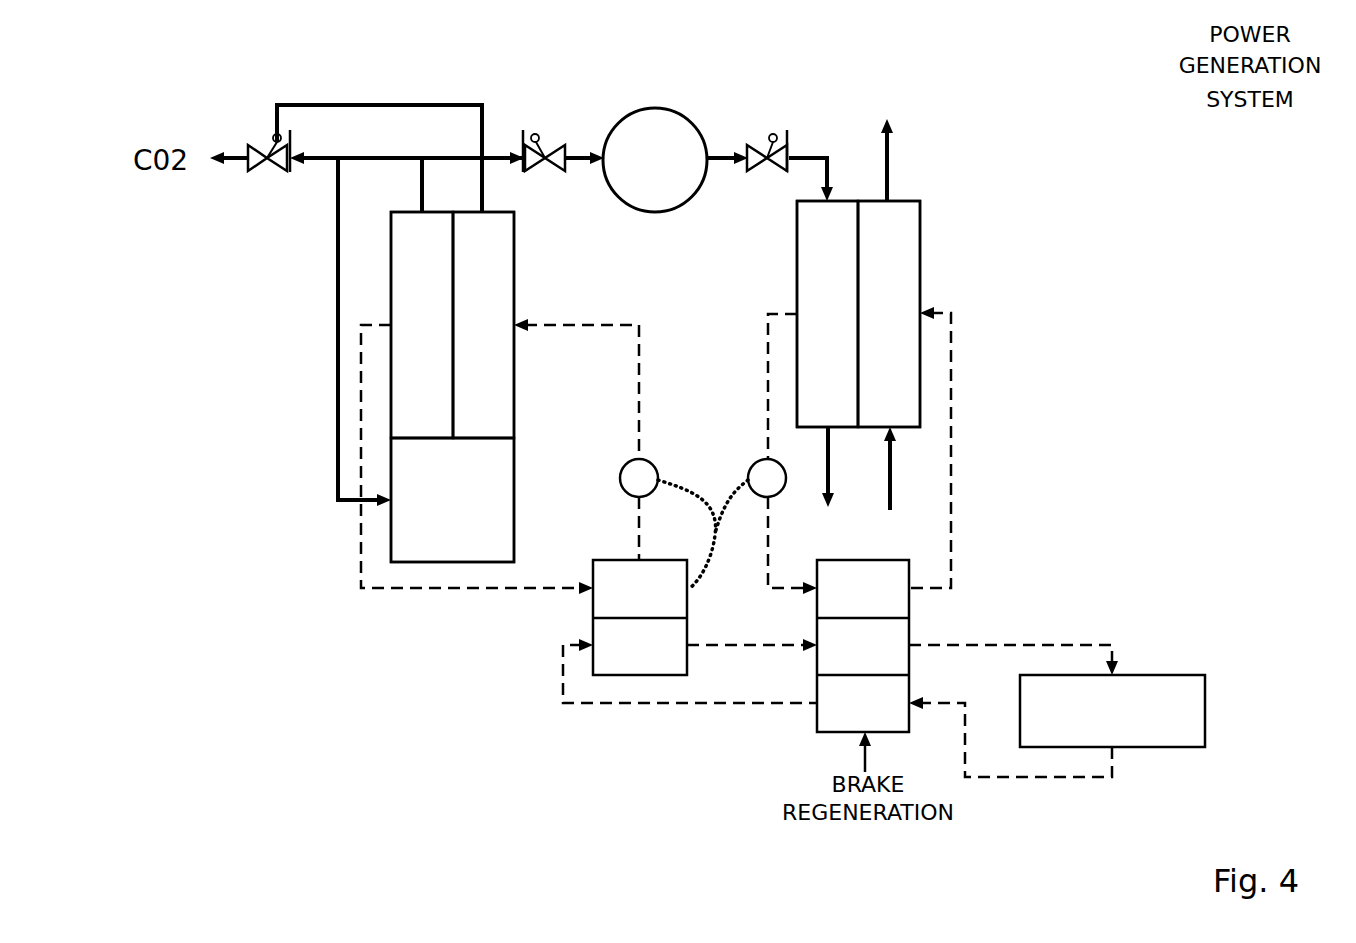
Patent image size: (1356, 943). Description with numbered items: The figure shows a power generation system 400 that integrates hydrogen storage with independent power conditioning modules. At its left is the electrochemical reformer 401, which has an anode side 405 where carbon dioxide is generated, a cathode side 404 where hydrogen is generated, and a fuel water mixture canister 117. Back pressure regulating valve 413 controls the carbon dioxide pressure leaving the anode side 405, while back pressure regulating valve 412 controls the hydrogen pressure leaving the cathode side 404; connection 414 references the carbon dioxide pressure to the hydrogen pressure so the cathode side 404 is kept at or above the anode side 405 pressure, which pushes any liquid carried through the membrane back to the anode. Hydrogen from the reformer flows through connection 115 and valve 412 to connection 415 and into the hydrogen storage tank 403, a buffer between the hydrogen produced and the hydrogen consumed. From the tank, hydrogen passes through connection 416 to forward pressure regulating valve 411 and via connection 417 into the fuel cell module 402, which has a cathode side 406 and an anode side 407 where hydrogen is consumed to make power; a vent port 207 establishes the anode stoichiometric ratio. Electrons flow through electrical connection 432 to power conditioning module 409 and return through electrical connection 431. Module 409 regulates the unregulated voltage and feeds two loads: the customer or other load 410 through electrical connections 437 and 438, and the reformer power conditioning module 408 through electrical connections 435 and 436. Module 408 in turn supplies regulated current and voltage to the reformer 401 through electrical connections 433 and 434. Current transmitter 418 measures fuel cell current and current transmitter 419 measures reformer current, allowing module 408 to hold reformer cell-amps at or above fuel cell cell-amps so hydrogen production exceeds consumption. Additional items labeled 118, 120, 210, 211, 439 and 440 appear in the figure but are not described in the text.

The power generation system 400 is at (1158, 226).
The electrochemical reformer 401 is at (318, 560).
The fuel cell module 402 is at (1018, 440).
The hydrogen storage tank 403 is at (673, 110).
The cathode side 404 is at (487, 238).
The anode side 405 is at (402, 262).
The cathode side 406 is at (895, 237).
The anode side 407 is at (807, 242).
The power conditioning module 408 is at (607, 603).
The power conditioning module 409 is at (842, 653).
The customer or other load 410 is at (1137, 685).
The forward pressure regulating valve 411 is at (757, 142).
The back pressure regulating valve 412 is at (550, 130).
The back pressure regulating valve 413 is at (262, 150).
The connection 414 is at (320, 105).
The connection 415 is at (578, 148).
The connection 416 is at (720, 165).
The connection 417 is at (813, 152).
The current transmitter 418 is at (758, 455).
The current transmitter 419 is at (628, 458).
The electrical connection 431 is at (953, 353).
The electrical connection 432 is at (765, 325).
The electrical connection 433 is at (613, 325).
The electrical connection 434 is at (378, 589).
The electrical connection 435 is at (727, 645).
The electrical connection 436 is at (563, 692).
The electrical connection 437 is at (993, 646).
The electrical connection 438 is at (965, 708).
The signal line 439 is at (713, 503).
The signal line 440 is at (705, 503).
The connection 115 is at (500, 152).
The fuel water mixture canister 117 is at (438, 522).
The reformer outlet line 118 is at (417, 175).
The fuel line 120 is at (337, 252).
The vent port 207 is at (900, 497).
The cathode air line 210 is at (900, 467).
The exhaust 211 is at (897, 162).